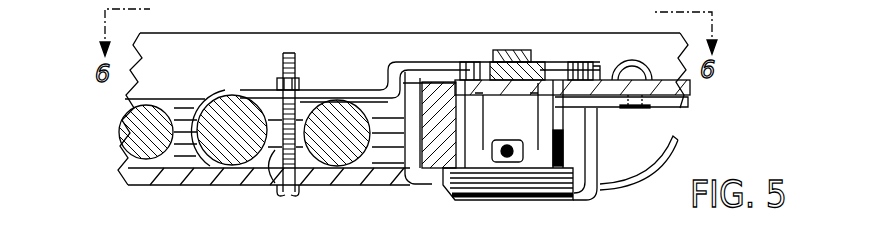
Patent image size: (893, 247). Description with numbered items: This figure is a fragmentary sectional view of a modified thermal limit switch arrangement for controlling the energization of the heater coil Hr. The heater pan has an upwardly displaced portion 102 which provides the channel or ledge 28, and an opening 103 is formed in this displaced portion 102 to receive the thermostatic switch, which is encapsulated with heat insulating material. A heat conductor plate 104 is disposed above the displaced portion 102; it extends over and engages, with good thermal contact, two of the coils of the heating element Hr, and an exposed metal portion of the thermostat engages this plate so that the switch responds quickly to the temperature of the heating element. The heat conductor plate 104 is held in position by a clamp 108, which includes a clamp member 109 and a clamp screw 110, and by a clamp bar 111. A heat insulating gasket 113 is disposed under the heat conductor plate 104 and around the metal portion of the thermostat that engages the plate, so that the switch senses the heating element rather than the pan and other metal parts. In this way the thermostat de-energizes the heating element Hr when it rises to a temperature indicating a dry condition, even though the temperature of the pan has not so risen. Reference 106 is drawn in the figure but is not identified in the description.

The heater coil Hr is at (115, 130).
The channel or ledge 28 is at (628, 67).
The upwardly displaced portion 102 is at (681, 103).
The opening 103 is at (472, 84).
The heat conductor plate 104 is at (395, 80).
The nut 106 is at (545, 80).
The clamp 108 is at (262, 76).
The clamp member 109 is at (247, 88).
The clamp screw 110 is at (270, 186).
The clamp bar 111 is at (523, 78).
The heat insulating gasket 113 is at (560, 140).